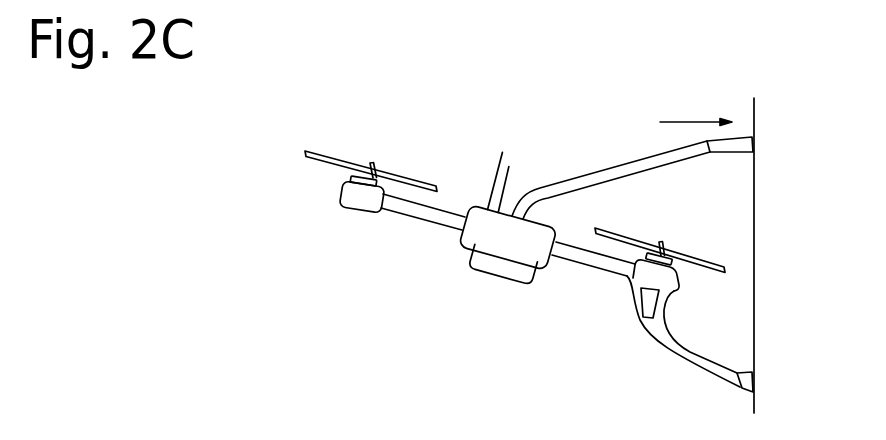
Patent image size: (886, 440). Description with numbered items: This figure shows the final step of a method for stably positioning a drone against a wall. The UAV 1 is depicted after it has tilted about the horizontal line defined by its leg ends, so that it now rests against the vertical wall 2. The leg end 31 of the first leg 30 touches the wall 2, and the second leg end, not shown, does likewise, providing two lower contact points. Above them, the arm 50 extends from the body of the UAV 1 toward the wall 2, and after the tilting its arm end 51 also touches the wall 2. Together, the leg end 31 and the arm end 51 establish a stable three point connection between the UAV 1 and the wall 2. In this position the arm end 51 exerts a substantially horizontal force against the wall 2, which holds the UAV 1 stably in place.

The UAV 1 is at (433, 306).
The wall 2 is at (755, 404).
The first leg 30 is at (702, 363).
The leg end 31 is at (755, 364).
The arm 50 is at (630, 168).
The arm end 51 is at (750, 133).